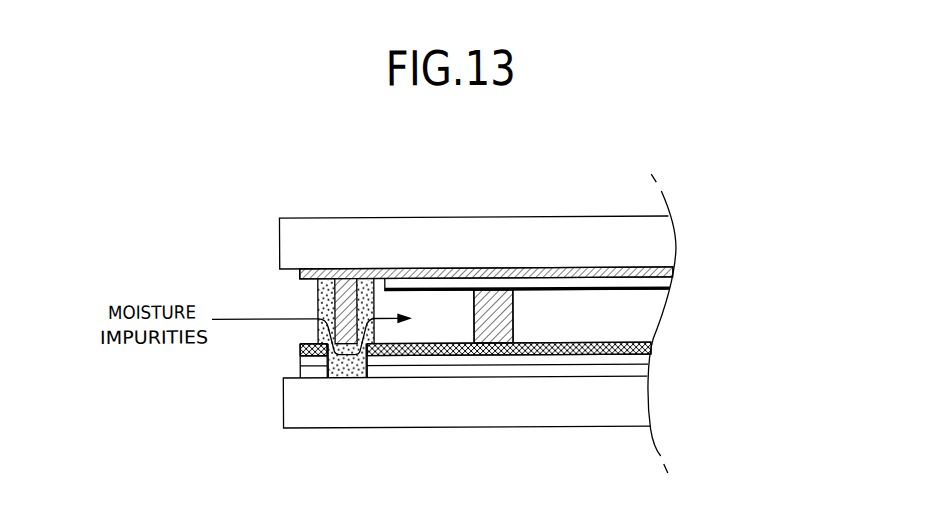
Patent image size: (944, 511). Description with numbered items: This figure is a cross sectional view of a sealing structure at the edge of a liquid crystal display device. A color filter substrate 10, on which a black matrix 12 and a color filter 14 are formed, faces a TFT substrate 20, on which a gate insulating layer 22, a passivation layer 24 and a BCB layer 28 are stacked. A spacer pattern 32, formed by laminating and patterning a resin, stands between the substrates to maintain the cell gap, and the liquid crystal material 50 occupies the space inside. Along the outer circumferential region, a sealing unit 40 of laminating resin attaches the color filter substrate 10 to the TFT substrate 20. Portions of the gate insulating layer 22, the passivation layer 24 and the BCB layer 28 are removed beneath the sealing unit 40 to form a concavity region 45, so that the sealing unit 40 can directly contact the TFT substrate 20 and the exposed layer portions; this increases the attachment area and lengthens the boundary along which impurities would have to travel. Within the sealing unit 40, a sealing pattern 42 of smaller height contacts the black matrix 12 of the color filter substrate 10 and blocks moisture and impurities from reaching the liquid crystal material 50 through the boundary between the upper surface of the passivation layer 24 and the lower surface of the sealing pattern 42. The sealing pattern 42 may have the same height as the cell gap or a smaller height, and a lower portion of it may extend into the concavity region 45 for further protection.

The color filter substrate 10 is at (657, 237).
The black matrix 12 is at (672, 267).
The color filter 14 is at (660, 285).
The liquid crystal material 50 is at (638, 319).
The TFT substrate 20 is at (632, 402).
The gate insulating layer 22 is at (645, 370).
The passivation layer 24 is at (650, 355).
The BCB layer 28 is at (570, 353).
The spacer pattern 32 is at (492, 353).
The sealing unit 40 is at (328, 293).
The sealing pattern 42 is at (338, 323).
The concavity region 45 is at (345, 380).